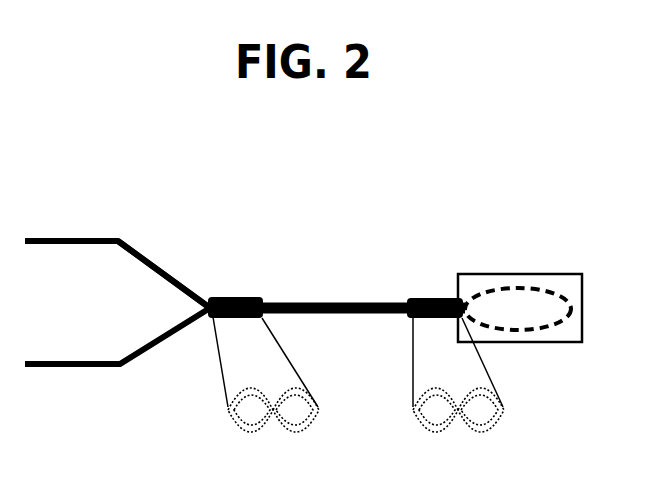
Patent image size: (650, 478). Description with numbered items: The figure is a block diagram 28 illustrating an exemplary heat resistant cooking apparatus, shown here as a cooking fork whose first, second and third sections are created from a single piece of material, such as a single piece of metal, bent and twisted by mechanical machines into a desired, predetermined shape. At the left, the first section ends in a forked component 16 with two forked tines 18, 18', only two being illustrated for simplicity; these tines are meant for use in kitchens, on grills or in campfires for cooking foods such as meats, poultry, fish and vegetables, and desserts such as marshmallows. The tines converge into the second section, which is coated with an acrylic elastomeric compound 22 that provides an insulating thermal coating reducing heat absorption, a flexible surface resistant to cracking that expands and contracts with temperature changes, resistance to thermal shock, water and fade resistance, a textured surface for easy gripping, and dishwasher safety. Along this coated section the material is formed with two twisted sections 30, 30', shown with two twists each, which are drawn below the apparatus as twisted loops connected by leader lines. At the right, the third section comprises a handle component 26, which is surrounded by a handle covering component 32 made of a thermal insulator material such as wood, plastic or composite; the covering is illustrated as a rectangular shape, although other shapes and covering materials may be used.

The forked component 16 is at (168, 270).
The forked tine 18 is at (117, 252).
The forked tine 18' is at (117, 367).
The acrylic elastomeric compound 22 is at (342, 302).
The handle component 26 is at (517, 330).
The block diagram 28 is at (568, 125).
The twisted section 30 is at (263, 347).
The twisted section 30' is at (455, 322).
The handle covering component 32 is at (518, 274).